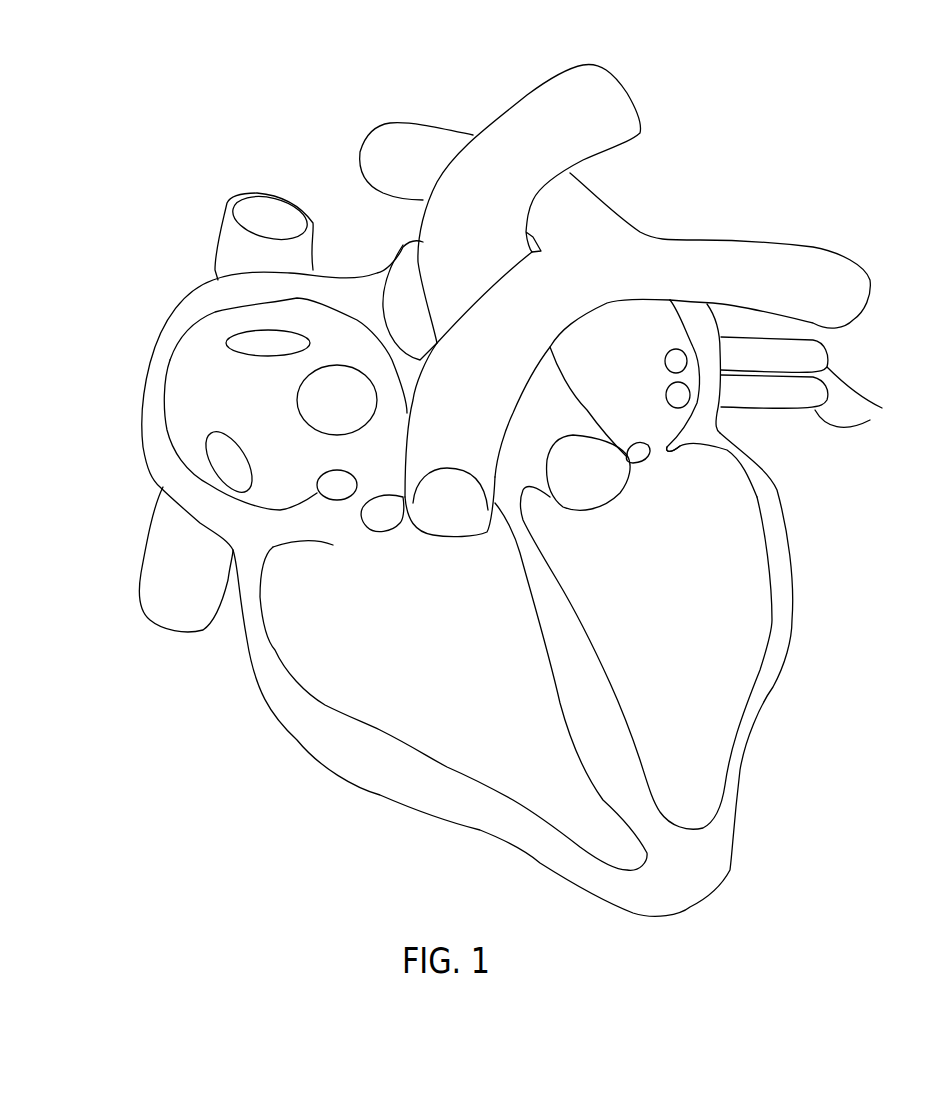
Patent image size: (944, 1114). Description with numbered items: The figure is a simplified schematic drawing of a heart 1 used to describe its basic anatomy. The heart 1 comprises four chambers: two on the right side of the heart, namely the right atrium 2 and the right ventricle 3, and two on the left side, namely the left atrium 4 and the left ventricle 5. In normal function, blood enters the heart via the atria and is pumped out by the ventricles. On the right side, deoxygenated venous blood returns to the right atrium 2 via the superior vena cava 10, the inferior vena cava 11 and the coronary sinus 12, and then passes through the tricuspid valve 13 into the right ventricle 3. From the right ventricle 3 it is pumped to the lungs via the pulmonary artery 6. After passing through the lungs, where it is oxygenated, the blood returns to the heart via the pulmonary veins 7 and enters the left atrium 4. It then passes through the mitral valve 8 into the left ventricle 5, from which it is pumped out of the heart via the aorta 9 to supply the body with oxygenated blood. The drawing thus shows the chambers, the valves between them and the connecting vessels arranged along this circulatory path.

The heart 1 is at (236, 137).
The right atrium 2 is at (233, 408).
The right ventricle 3 is at (473, 718).
The left atrium 4 is at (632, 335).
The left ventricle 5 is at (725, 699).
The pulmonary artery 6 is at (485, 393).
The pulmonary veins 7 is at (812, 384).
The mitral valve 8 is at (673, 450).
The aorta 9 is at (494, 233).
The superior vena cava 10 is at (215, 238).
The inferior vena cava 11 is at (140, 565).
The coronary sinus 12 is at (323, 538).
The tricuspid valve 13 is at (333, 547).